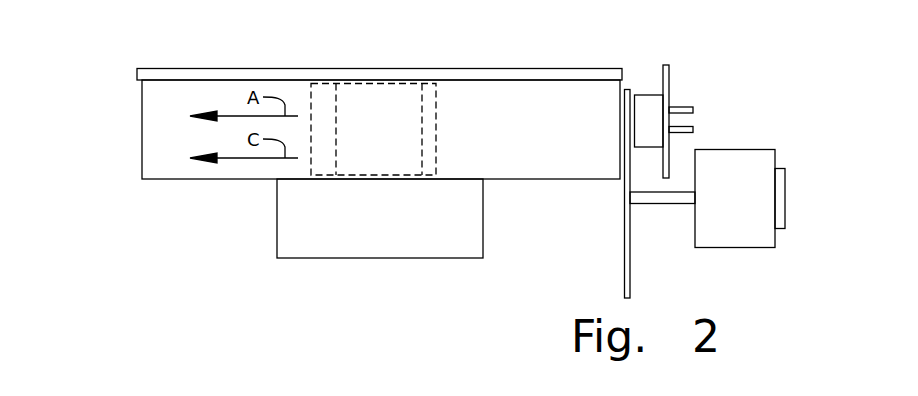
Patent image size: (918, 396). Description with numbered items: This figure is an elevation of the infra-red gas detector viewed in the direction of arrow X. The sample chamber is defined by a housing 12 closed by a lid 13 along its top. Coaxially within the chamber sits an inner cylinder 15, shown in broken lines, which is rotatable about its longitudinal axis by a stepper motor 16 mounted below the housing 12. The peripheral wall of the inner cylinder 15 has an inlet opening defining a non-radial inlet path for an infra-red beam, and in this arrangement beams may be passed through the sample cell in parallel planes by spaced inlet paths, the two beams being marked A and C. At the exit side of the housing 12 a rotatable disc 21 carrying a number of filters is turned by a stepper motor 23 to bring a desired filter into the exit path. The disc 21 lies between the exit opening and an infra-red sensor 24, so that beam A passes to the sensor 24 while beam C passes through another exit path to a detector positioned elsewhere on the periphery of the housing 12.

The housing 12 is at (150, 133).
The lid 13 is at (138, 73).
The inner cylinder 15 is at (320, 102).
The stepper motor 16 is at (288, 213).
The rotatable disc 21 is at (627, 208).
The stepper motor 23 is at (707, 199).
The infra-red sensor 24 is at (655, 116).